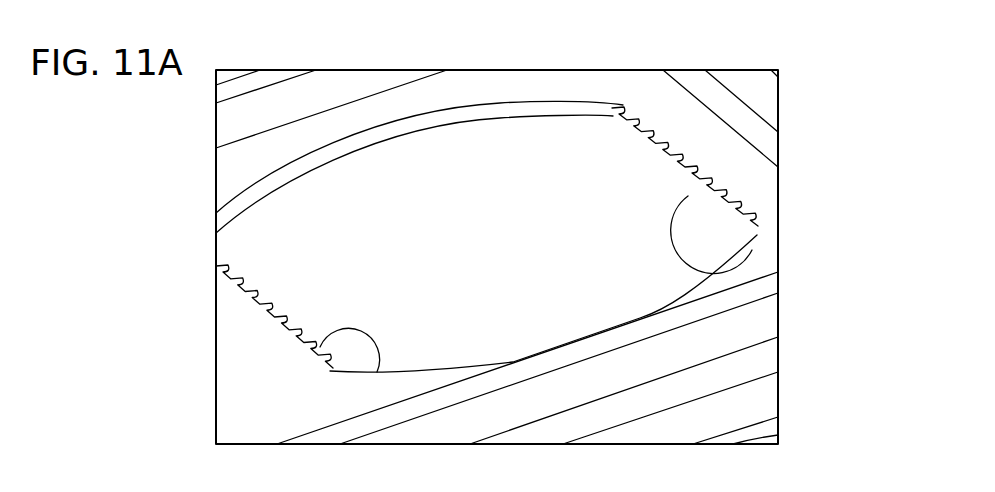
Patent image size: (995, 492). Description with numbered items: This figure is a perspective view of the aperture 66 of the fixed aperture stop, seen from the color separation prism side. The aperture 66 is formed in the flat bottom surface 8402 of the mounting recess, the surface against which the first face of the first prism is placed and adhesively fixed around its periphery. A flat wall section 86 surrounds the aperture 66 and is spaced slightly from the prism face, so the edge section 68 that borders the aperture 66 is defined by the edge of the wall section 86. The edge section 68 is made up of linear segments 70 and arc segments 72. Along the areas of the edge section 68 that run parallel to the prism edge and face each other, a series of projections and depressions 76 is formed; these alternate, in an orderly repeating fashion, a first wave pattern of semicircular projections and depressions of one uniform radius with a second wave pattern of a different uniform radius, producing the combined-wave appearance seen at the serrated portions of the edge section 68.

The aperture 66 is at (310, 353).
The edge section 68 is at (785, 234).
The linear segments 70 is at (652, 171).
The arc segments 72 is at (343, 148).
The projections and depressions 76 is at (712, 277).
The wall section 86 is at (757, 247).
The bottom surface 8402 is at (760, 100).